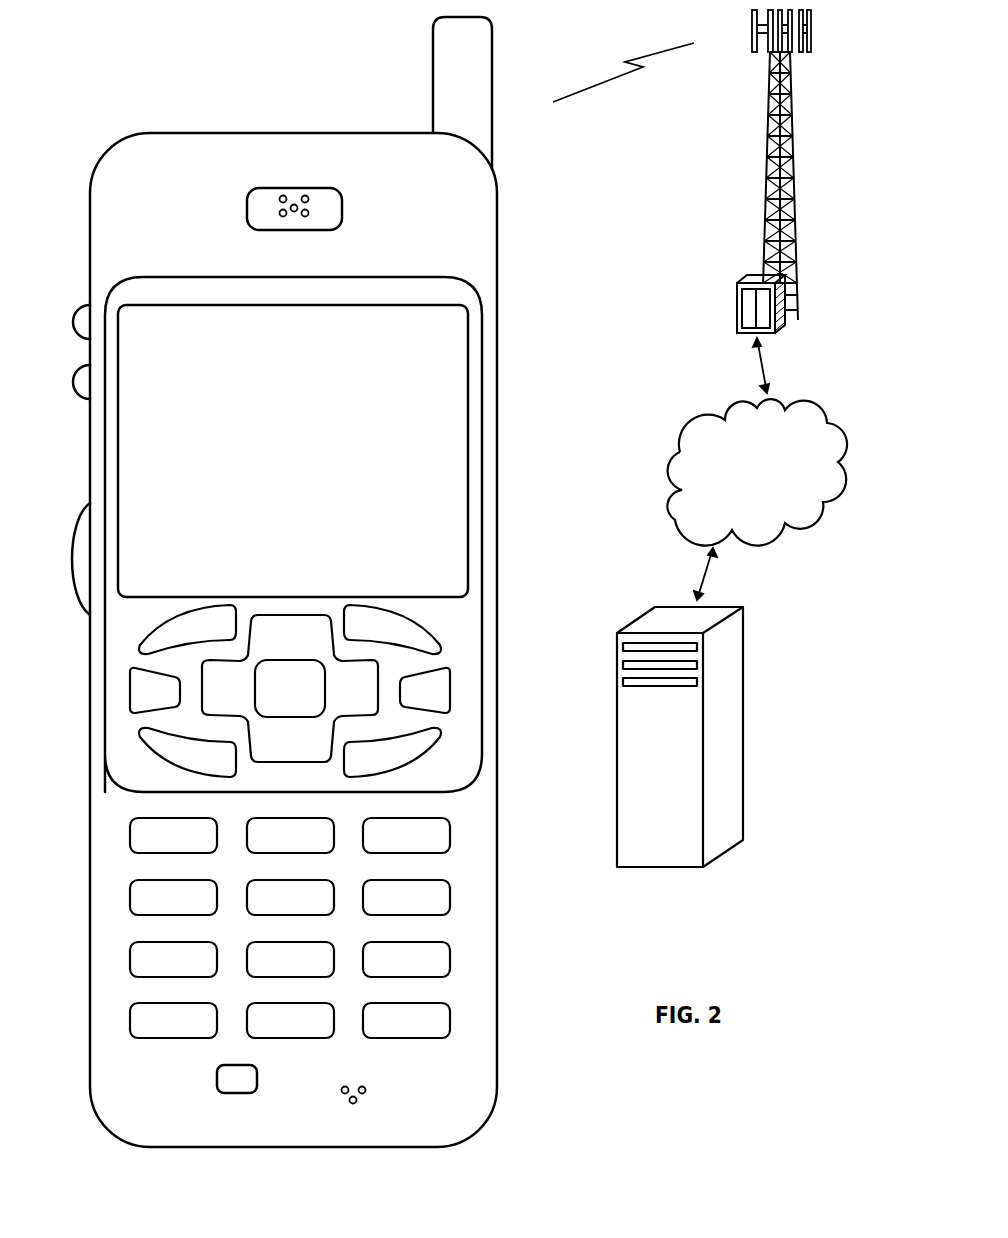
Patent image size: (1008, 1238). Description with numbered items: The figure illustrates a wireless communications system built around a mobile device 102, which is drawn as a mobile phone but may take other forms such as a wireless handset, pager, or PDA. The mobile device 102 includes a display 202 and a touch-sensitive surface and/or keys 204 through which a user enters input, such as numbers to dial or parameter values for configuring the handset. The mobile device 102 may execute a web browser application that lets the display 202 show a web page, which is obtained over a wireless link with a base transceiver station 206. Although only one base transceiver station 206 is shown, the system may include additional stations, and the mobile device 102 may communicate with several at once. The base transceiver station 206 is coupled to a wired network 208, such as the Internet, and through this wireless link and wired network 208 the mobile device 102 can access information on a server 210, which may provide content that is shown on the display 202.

The mobile device 102 is at (139, 1147).
The display 202 is at (470, 317).
The keys 204 is at (507, 1047).
The base transceiver station 206 is at (763, 183).
The wired network 208 is at (678, 522).
The server 210 is at (659, 867).